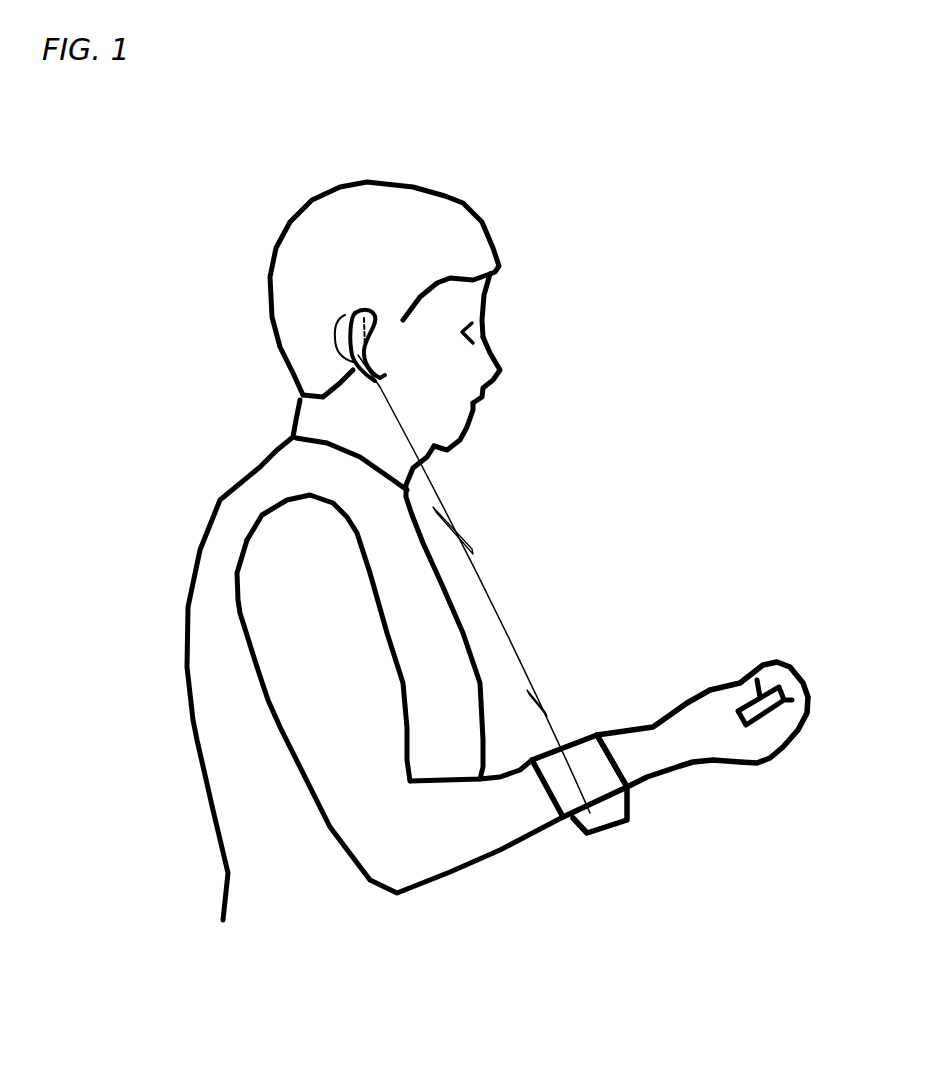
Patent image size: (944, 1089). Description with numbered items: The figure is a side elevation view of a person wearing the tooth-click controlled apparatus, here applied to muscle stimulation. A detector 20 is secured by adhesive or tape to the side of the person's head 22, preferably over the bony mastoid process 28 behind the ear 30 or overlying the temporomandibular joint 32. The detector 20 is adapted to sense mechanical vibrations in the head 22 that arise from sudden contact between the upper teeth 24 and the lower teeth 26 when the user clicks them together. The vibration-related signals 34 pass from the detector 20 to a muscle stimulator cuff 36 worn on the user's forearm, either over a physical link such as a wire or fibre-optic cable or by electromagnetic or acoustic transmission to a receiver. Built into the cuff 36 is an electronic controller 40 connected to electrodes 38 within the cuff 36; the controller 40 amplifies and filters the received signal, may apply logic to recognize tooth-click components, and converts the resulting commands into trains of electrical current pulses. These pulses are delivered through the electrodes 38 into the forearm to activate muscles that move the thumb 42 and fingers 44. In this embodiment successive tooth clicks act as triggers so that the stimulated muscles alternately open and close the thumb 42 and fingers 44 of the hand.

The detector 20 is at (345, 316).
The head 22 is at (288, 222).
The upper teeth 24 is at (490, 400).
The lower teeth 26 is at (477, 417).
The mastoid process 28 is at (375, 318).
The ear 30 is at (365, 316).
The temporomandibular joint 32 is at (387, 343).
The vibration-related signals 34 is at (493, 600).
The muscle stimulator cuff 36 is at (587, 733).
The electrodes 38 is at (603, 780).
The electronic controller 40 is at (610, 813).
The thumb 42 is at (757, 683).
The fingers 44 is at (790, 713).